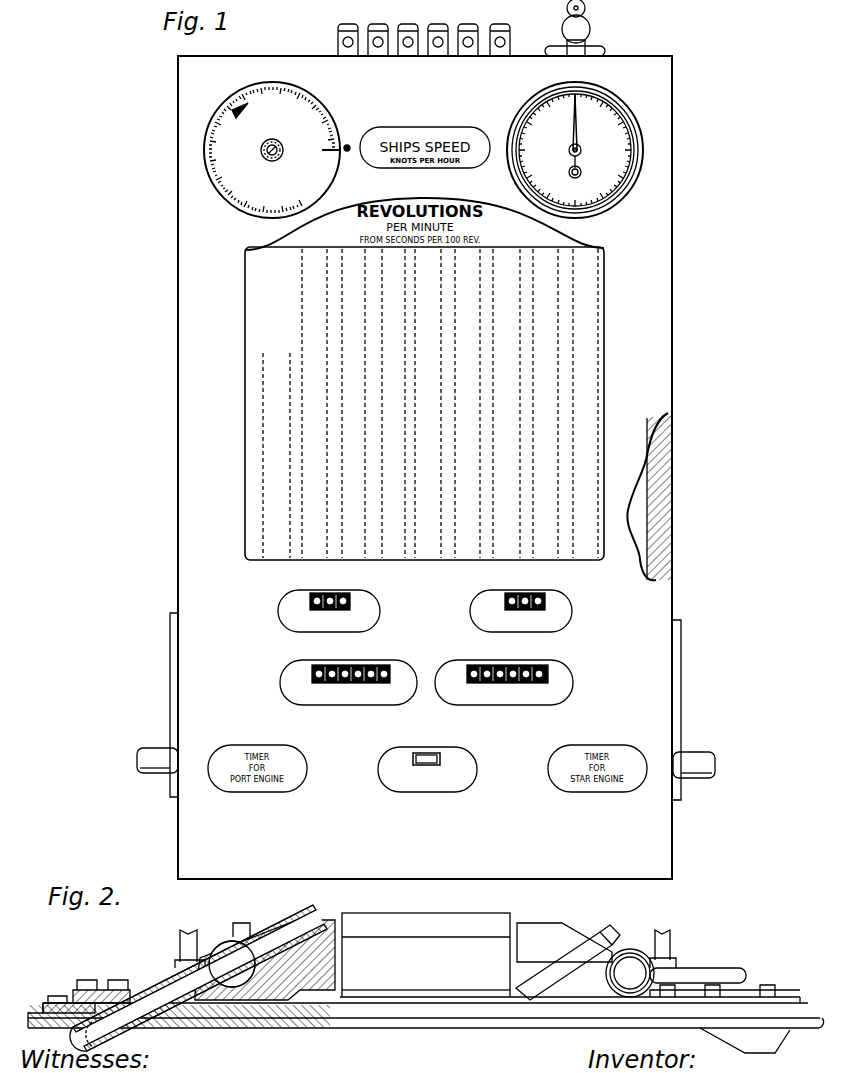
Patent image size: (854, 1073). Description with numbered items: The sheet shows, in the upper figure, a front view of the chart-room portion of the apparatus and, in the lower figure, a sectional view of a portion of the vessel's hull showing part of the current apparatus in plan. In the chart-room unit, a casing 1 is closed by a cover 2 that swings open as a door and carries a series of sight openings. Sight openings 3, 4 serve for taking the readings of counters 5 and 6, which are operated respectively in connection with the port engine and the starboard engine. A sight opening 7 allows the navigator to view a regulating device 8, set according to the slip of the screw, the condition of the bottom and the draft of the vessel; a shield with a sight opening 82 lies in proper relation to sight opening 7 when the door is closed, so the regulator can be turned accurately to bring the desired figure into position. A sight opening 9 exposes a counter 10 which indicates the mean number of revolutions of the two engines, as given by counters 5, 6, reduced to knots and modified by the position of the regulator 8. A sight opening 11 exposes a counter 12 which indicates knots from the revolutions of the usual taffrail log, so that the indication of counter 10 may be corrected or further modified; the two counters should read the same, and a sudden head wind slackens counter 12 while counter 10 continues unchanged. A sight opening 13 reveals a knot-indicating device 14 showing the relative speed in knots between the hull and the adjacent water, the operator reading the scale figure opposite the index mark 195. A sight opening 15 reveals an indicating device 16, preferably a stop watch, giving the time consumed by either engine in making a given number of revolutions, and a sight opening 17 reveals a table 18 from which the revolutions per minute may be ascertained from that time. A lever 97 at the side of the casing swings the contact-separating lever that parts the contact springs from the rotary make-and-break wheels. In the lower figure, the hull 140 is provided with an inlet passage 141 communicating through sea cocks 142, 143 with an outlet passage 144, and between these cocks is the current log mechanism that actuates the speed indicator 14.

In FIG. 1, the casing 1 is at (673, 514).
In FIG. 1, the cover 2 is at (625, 565).
In FIG. 1, the sight opening 3 is at (390, 670).
In FIG. 1, the sight opening 4 is at (493, 668).
In FIG. 1, the counter 5 is at (366, 668).
In FIG. 1, the counter 6 is at (538, 670).
In FIG. 1, the sight opening 7 is at (378, 760).
In FIG. 1, the regulating device 8 is at (438, 756).
In FIG. 1, the sight opening 82 is at (413, 758).
In FIG. 1, the sight opening 9 is at (507, 597).
In FIG. 1, the counter 10 is at (523, 596).
In FIG. 1, the sight opening 11 is at (312, 597).
In FIG. 1, the counter 12 is at (330, 596).
In FIG. 1, the sight opening 13 is at (318, 101).
In FIG. 1, the knot-indicating device 14 is at (235, 99).
In FIG. 1, the sight opening 15 is at (538, 97).
In FIG. 1, the indicating device 16 is at (603, 118).
In FIG. 1, the sight opening 17 is at (605, 381).
In FIG. 1, the table 18 is at (585, 322).
In FIG. 1, the index mark 195 is at (347, 145).
In FIG. 1, the lever 97 is at (170, 689).
In FIG. 2, the hull 140 is at (373, 1018).
In FIG. 2, the inlet passage 141 is at (778, 1052).
In FIG. 2, the sea cock 142 is at (636, 958).
In FIG. 2, the sea cock 143 is at (215, 950).
In FIG. 2, the outlet passage 144 is at (113, 1022).